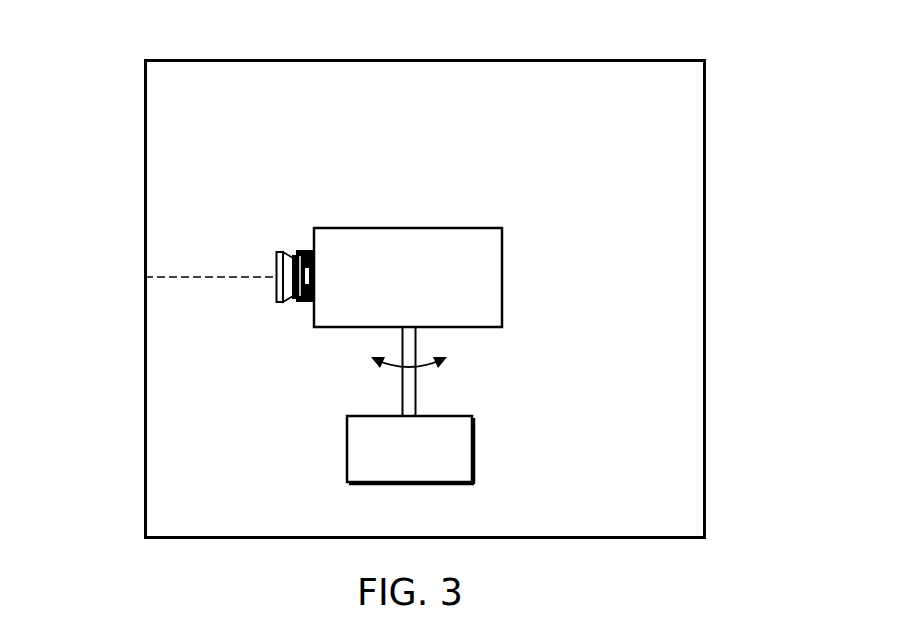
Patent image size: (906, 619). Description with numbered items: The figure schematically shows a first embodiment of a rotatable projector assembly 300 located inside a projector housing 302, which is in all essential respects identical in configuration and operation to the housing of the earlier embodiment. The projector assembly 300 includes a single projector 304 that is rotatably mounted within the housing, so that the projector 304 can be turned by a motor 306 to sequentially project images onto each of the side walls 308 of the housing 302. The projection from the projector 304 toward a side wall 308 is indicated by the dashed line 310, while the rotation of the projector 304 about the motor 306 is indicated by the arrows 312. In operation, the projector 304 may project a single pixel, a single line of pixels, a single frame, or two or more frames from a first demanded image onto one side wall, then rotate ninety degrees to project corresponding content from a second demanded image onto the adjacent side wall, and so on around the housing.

The projector assembly 300 is at (604, 377).
The projector housing 302 is at (120, 80).
The projector 304 is at (503, 275).
The motor 306 is at (475, 450).
The side walls 308 is at (145, 217).
The dashed line 310 is at (220, 277).
The arrows 312 is at (396, 367).